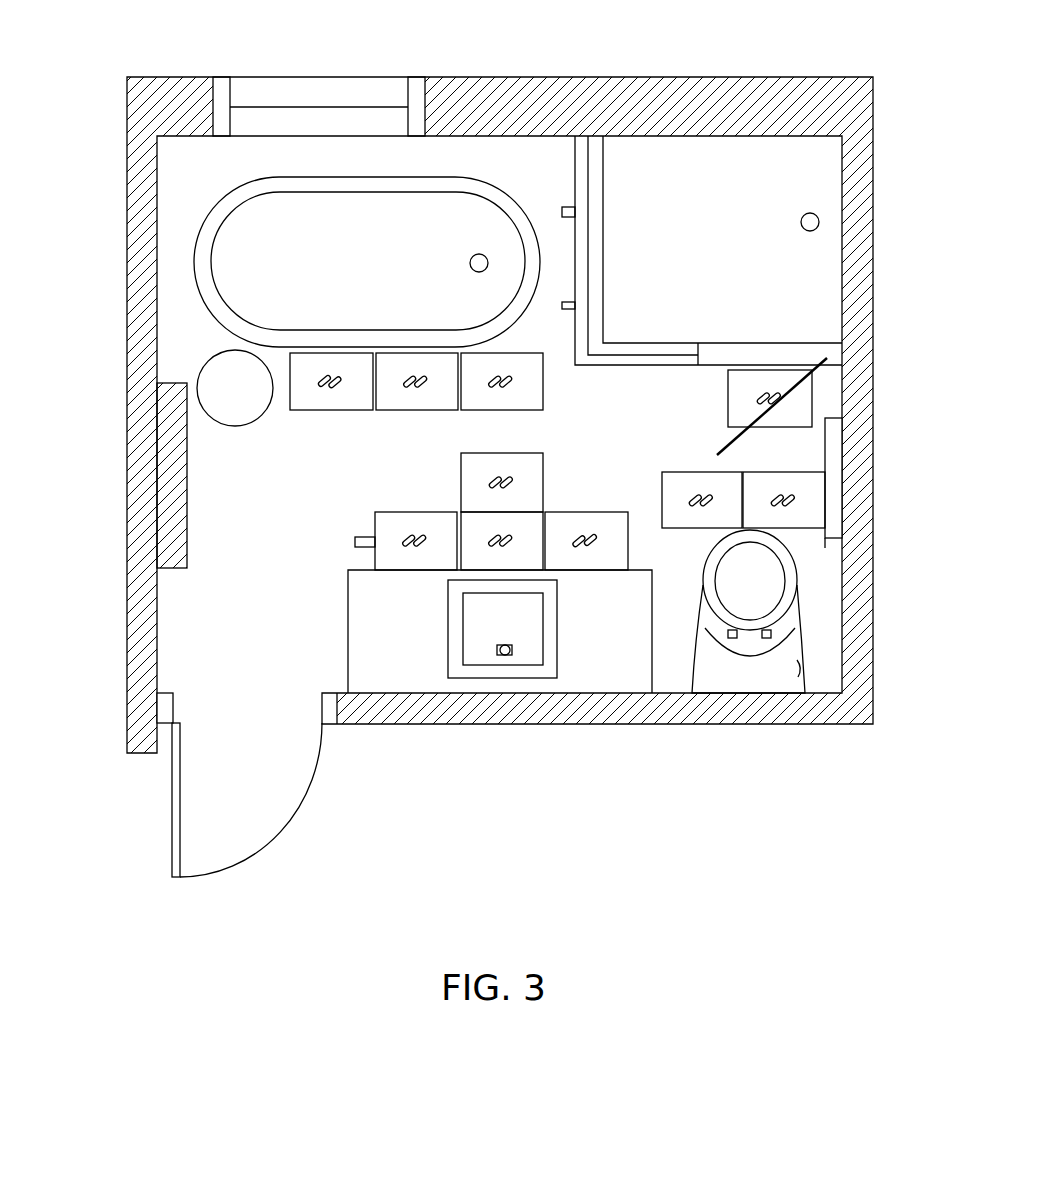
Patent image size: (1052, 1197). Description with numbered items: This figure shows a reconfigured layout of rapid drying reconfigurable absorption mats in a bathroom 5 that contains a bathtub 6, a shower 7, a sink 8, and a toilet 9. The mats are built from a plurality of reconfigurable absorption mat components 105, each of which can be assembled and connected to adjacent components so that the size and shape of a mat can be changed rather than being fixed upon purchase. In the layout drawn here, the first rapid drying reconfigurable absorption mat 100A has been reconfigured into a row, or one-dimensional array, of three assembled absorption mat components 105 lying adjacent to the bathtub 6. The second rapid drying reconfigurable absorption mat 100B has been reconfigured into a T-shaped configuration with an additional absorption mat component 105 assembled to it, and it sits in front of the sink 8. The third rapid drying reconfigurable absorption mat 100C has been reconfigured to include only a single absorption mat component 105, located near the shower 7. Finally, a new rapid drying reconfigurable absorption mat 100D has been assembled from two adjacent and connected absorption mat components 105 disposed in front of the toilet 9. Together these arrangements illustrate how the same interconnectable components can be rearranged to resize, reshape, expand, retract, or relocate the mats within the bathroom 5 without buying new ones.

The bathroom 5 is at (108, 142).
The bathtub 6 is at (437, 177).
The shower 7 is at (820, 271).
The sink 8 is at (503, 672).
The toilet 9 is at (798, 610).
The first rapid drying reconfigurable absorption mat 100A is at (290, 424).
The second rapid drying reconfigurable absorption mat 100B is at (330, 566).
The third rapid drying reconfigurable absorption mat 100C is at (705, 390).
The new rapid drying reconfigurable absorption mat 100D is at (686, 500).
The absorption mat component 105 is at (590, 574).